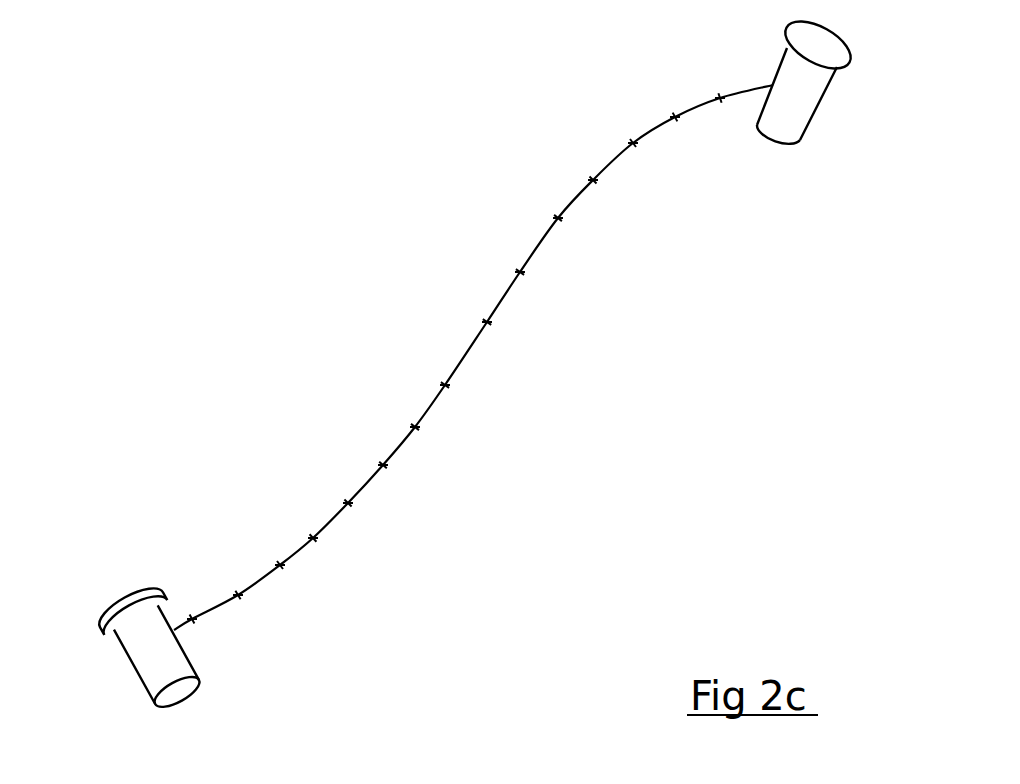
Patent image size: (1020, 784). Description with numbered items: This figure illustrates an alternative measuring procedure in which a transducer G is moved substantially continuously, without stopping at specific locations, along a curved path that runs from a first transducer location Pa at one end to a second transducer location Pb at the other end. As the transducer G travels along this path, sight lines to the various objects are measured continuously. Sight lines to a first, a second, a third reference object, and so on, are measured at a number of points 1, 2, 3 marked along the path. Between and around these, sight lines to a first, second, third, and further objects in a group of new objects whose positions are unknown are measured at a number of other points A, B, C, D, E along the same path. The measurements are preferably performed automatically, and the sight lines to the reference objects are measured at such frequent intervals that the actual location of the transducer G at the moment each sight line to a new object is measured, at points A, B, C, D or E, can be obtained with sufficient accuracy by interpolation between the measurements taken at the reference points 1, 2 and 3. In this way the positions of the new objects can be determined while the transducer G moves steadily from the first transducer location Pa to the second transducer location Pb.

The measuring point for first reference object 1 is at (371, 400).
The measuring point for second reference object 2 is at (482, 306).
The measuring point for third reference object 3 is at (419, 374).
The measuring point for first new object A is at (373, 482).
The measuring point for second new object B is at (510, 357).
The measuring point for third new object C is at (484, 361).
The measuring point for fourth new object D is at (541, 307).
The measuring point for fifth new object E is at (505, 349).
The transducer G is at (141, 644).
The first transducer location Pa is at (170, 654).
The second transducer location Pb is at (778, 98).